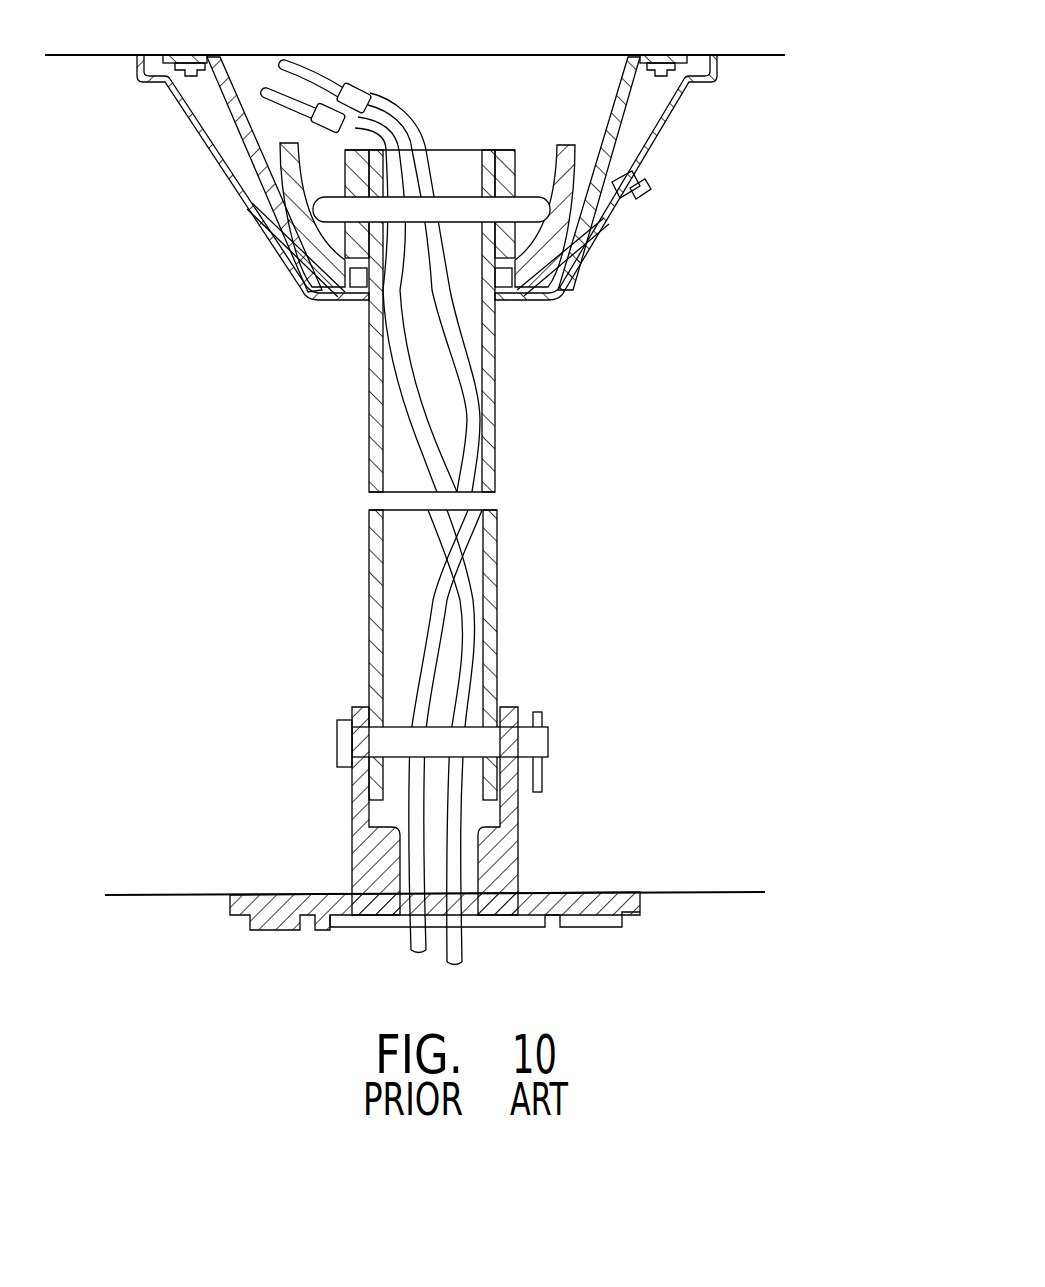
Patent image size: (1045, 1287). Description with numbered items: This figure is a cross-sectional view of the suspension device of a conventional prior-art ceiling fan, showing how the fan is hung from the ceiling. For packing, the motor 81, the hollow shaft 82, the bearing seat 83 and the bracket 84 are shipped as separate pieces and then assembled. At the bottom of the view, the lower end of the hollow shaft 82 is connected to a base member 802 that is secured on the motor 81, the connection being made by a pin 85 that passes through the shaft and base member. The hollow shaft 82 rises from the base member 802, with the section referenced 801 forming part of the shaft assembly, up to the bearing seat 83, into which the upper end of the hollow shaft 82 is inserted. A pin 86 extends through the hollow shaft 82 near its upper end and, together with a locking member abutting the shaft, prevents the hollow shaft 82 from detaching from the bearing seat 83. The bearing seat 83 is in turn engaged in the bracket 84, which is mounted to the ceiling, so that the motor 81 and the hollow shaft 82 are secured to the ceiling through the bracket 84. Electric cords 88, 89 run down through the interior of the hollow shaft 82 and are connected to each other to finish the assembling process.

The motor 81 is at (668, 935).
The hollow shaft 82 is at (497, 452).
The lower tube section 801 is at (467, 600).
The base member 802 is at (508, 845).
The bearing seat 83 is at (572, 158).
The bracket 84 is at (622, 58).
The pin 85 is at (526, 745).
The pin 86 is at (532, 197).
The electric cord 88 is at (297, 62).
The electric cord 89 is at (350, 86).